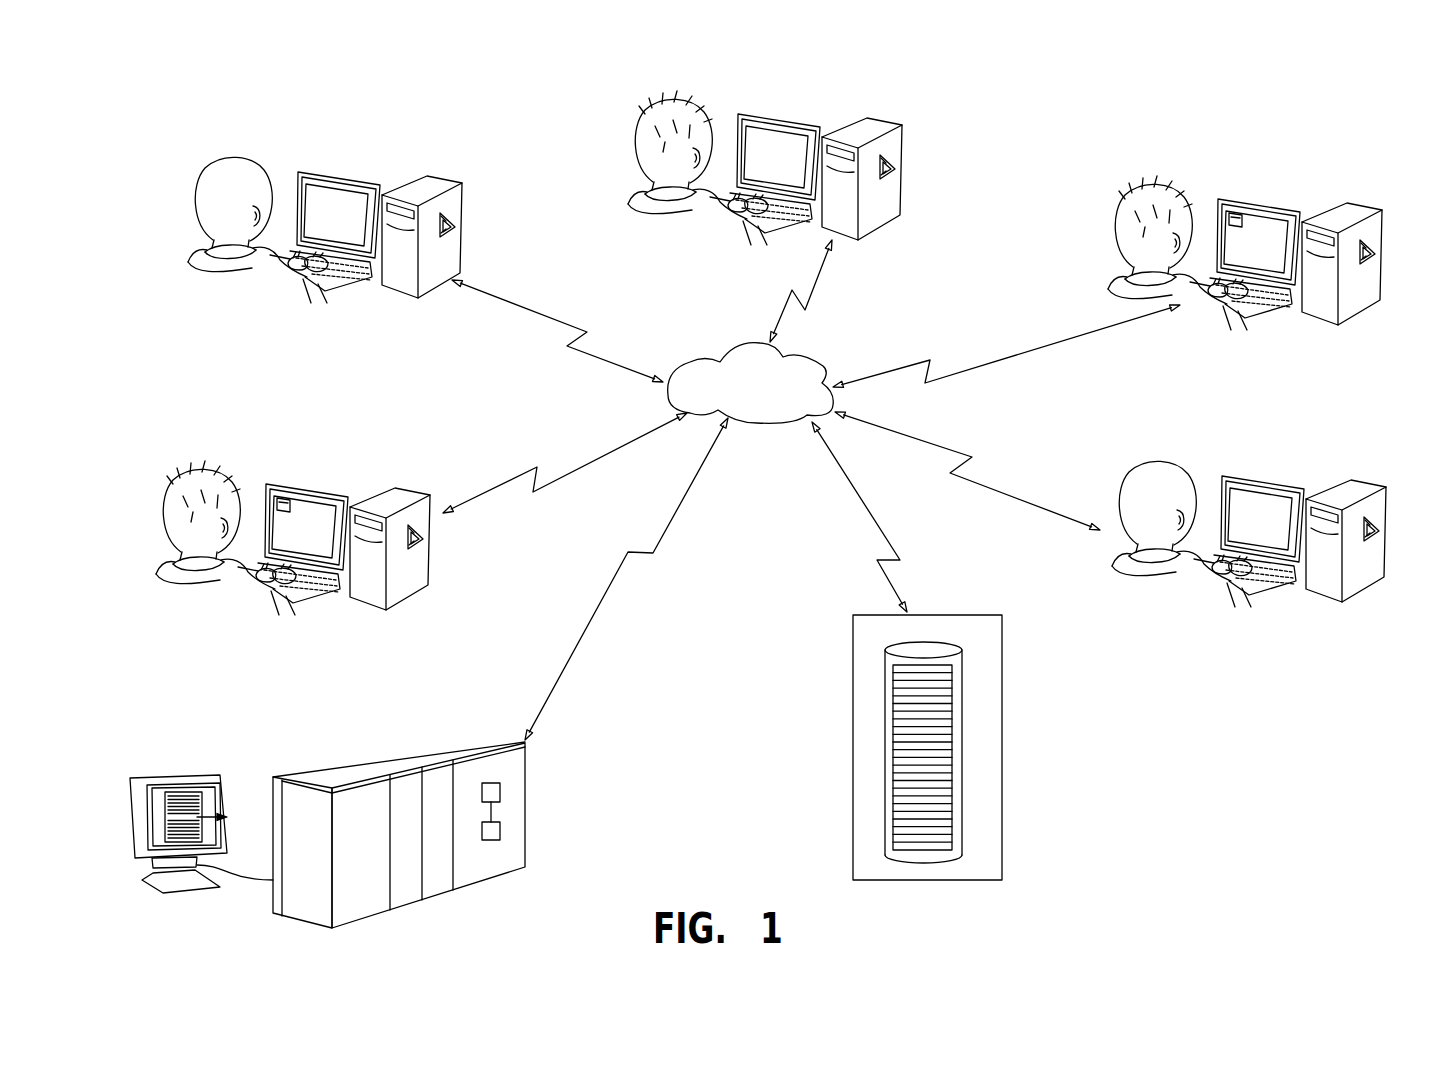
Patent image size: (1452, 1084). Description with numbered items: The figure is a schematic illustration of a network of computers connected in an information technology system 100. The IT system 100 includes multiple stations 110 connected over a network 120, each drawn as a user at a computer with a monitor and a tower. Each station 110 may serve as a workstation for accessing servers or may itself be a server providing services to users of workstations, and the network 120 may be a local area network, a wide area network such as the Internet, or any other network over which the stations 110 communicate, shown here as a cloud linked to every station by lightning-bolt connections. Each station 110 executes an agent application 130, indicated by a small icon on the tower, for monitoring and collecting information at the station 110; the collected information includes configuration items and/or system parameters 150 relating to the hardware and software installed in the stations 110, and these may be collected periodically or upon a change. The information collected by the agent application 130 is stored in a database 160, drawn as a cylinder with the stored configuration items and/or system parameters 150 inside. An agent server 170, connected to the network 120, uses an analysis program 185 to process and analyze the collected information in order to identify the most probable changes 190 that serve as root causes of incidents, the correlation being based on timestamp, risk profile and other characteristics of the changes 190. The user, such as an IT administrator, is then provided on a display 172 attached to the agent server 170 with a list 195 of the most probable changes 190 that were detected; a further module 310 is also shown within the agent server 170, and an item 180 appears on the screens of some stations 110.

The information technology system 100 is at (459, 98).
The station 110 is at (868, 342).
The network 120 is at (813, 362).
The agent application 130 is at (924, 354).
The configuration items and/or system parameters 150 is at (952, 717).
The database 160 is at (1000, 688).
The agent server 170 is at (367, 757).
The display 172 is at (192, 775).
The client application 180 is at (316, 188).
The analysis program 185 is at (500, 787).
The changes 190 is at (230, 815).
The list 195 is at (198, 795).
The server module 310 is at (500, 828).